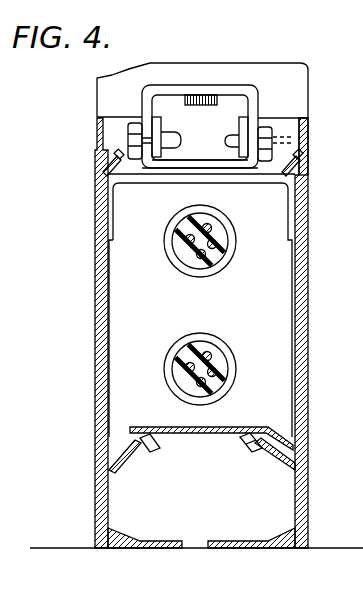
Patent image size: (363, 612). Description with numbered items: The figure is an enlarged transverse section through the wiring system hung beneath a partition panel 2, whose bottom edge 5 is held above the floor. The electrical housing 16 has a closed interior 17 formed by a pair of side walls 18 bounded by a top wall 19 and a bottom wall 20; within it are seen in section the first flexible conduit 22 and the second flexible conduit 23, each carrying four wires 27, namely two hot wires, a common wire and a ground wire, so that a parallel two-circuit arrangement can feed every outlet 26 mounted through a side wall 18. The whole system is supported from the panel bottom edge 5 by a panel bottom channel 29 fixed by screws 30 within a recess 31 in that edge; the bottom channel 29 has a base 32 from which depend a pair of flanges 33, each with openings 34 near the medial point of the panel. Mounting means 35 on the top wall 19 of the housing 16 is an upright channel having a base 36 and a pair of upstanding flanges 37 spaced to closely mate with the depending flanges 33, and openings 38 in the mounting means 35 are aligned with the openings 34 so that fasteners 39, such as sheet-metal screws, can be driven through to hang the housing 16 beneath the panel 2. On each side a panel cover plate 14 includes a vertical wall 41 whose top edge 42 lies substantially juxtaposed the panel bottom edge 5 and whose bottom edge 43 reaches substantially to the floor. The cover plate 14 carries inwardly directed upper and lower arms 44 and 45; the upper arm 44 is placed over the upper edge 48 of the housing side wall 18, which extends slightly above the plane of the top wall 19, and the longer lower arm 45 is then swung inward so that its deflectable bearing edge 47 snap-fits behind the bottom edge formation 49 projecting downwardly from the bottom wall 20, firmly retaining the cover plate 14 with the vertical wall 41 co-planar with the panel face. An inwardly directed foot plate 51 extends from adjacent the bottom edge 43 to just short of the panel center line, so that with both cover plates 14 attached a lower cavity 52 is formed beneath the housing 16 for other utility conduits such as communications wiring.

The panel 2 is at (255, 80).
The bottom edge 5 is at (290, 118).
The panel cover plate 14 is at (309, 460).
The housing 16 is at (125, 290).
The closed interior 17 is at (250, 302).
The side wall 18 is at (112, 332).
The top wall 19 is at (180, 180).
The bottom wall 20 is at (213, 434).
The first flexible conduit 22 is at (238, 368).
The second flexible conduit 23 is at (237, 245).
The outlet 26 is at (318, 0).
The wires 27 is at (228, 350).
The panel bottom channel 29 is at (130, 89).
The screws 30 is at (199, 100).
The recess 31 is at (168, 85).
The base 32 is at (252, 86).
The flanges 33 is at (142, 104).
The openings 34 is at (160, 137).
The mounting means 35 is at (213, 158).
The base 36 is at (225, 168).
The upstanding flanges 37 is at (243, 127).
The openings 38 is at (287, 136).
The fasteners 39 is at (128, 138).
The vertical wall 41 is at (97, 260).
The top edge 42 is at (299, 130).
The bottom edge 43 is at (308, 548).
The upper arm 44 is at (286, 164).
The lower arm 45 is at (280, 460).
The bearing edge 47 is at (262, 442).
The upper edge 48 is at (308, 166).
The bottom edge formation 49 is at (292, 437).
The foot plate 51 is at (237, 548).
The lower cavity 52 is at (186, 514).